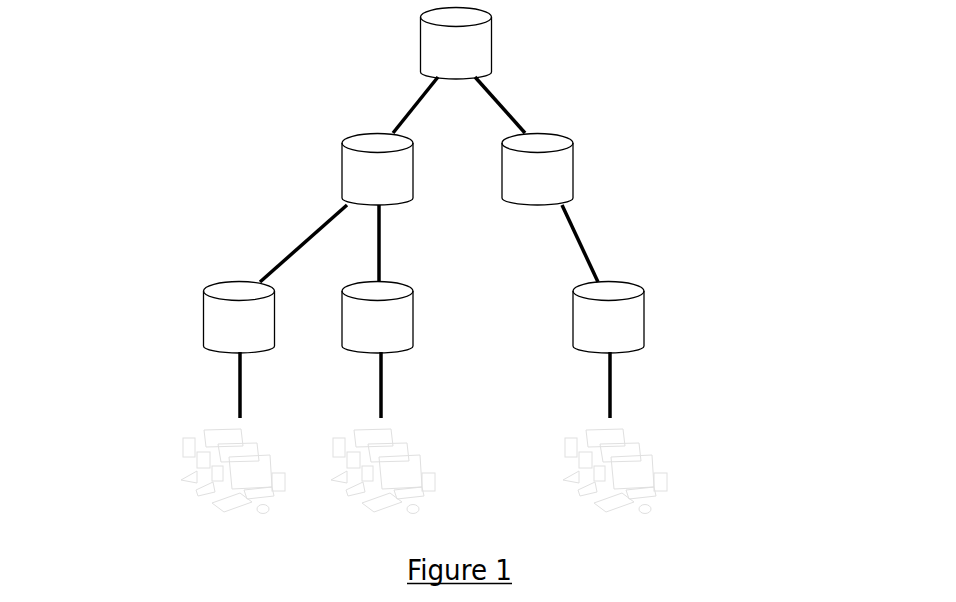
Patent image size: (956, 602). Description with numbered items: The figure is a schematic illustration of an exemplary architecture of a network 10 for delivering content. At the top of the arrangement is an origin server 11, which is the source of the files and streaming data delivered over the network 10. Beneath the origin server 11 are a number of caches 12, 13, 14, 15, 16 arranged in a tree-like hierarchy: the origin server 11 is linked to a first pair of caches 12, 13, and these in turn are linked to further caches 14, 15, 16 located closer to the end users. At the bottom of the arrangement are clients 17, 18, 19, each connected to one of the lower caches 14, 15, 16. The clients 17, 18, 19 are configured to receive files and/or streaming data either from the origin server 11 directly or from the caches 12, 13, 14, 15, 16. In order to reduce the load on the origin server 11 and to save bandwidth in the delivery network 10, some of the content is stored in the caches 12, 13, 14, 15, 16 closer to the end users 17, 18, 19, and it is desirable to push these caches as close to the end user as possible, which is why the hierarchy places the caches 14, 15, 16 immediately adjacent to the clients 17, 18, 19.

The network 10 is at (143, 133).
The origin server 11 is at (492, 53).
The cache 12 is at (342, 170).
The cache 13 is at (573, 168).
The cache 14 is at (203, 318).
The cache 15 is at (413, 319).
The cache 16 is at (644, 317).
The client 17 is at (158, 467).
The client 18 is at (445, 467).
The client 19 is at (692, 465).